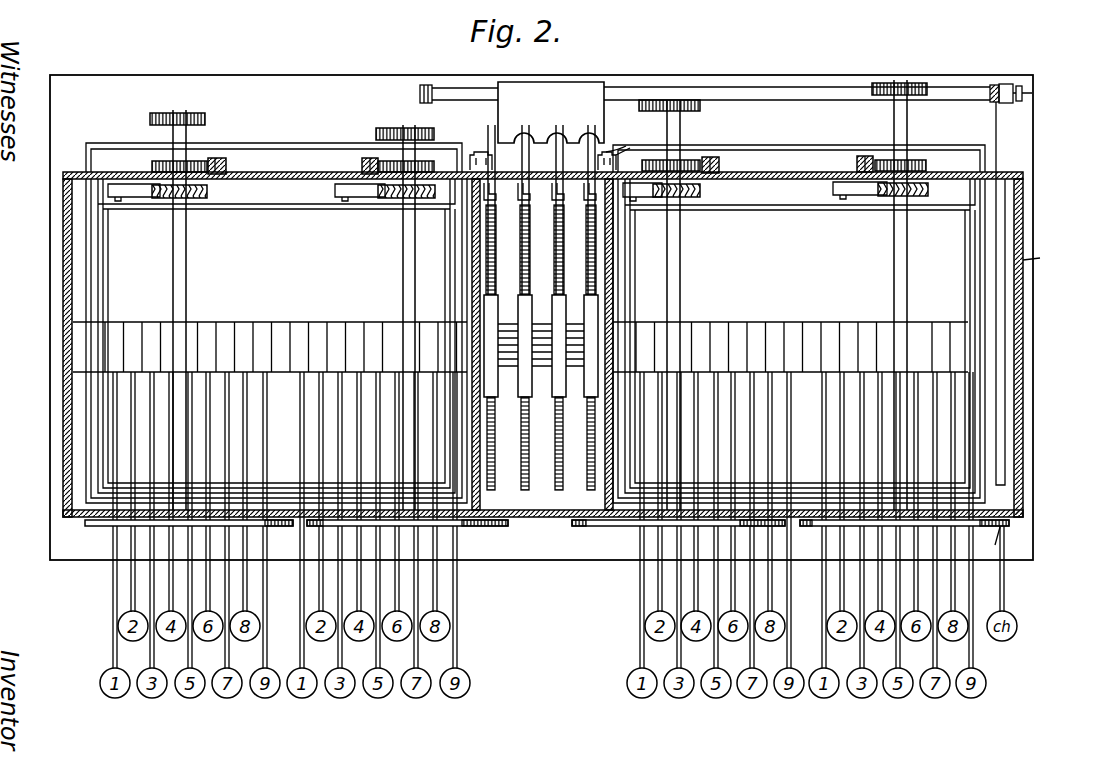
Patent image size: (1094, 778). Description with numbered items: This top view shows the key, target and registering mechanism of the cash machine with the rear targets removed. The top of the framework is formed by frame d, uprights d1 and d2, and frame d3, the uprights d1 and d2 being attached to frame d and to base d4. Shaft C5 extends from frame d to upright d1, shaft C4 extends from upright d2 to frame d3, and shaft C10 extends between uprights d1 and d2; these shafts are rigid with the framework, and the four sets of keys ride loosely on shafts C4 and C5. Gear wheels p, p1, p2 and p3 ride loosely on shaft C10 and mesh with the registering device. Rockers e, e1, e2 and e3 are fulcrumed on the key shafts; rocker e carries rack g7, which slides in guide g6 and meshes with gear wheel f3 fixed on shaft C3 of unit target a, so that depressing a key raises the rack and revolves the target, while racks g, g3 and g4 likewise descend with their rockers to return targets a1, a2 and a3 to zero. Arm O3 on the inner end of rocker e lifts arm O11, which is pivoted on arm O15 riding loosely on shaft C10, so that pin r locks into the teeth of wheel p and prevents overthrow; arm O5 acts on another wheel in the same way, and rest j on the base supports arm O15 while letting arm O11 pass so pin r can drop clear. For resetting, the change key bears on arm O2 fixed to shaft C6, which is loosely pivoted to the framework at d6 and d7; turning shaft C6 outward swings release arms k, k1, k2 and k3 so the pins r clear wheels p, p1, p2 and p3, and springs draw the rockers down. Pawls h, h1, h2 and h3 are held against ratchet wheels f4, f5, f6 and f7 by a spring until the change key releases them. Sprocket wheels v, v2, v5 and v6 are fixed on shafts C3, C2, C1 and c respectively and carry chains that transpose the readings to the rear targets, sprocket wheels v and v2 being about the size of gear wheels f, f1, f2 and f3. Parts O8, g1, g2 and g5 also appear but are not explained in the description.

The frame d is at (63, 288).
The upright d1 is at (472, 268).
The upright d2 is at (613, 265).
The frame d3 is at (1040, 257).
The base d4 is at (986, 539).
The framework pivot d6 is at (1032, 93).
The framework pivot d7 is at (426, 92).
The rest j is at (551, 112).
The shaft C6 is at (795, 92).
The arm O2 is at (996, 86).
The rod O8 is at (995, 104).
The sprocket wheel v is at (912, 83).
The sprocket wheel v2 is at (686, 100).
The sprocket wheel v5 is at (402, 122).
The sprocket wheel v6 is at (176, 107).
The shaft c is at (186, 280).
The shaft C1 is at (403, 283).
The shaft C2 is at (680, 280).
The shaft C3 is at (907, 262).
The shaft C4 is at (790, 330).
The shaft C5 is at (292, 328).
The shaft C10 is at (542, 374).
The gear wheel f is at (152, 165).
The gear wheel f1 is at (428, 162).
The gear wheel f2 is at (690, 160).
The gear wheel f3 is at (918, 160).
The ratchet wheel f4 is at (890, 197).
The ratchet wheel f5 is at (700, 198).
The ratchet wheel f6 is at (398, 199).
The ratchet wheel f7 is at (194, 199).
The rack g is at (217, 158).
The pawl block g1 is at (226, 166).
The pawl block g2 is at (362, 165).
The rack g3 is at (368, 158).
The rack g4 is at (716, 157).
The pawl g5 is at (719, 165).
The guide g6 is at (857, 165).
The rack g7 is at (866, 156).
The pawl h is at (856, 196).
The pawl h1 is at (642, 198).
The pawl h2 is at (360, 198).
The pawl h3 is at (135, 198).
The rocker e is at (790, 150).
The rocker e1 is at (800, 212).
The rocker e2 is at (290, 212).
The rocker e3 is at (284, 150).
The release arm k is at (588, 230).
The release arm k1 is at (556, 230).
The release arm k2 is at (522, 230).
The release arm k3 is at (485, 215).
The gear wheel p is at (586, 270).
The gear wheel p1 is at (554, 272).
The gear wheel p2 is at (520, 272).
The gear wheel p3 is at (486, 240).
The pin r is at (538, 191).
The arm O5 is at (477, 142).
The arm O11 is at (596, 152).
The arm O15 is at (622, 128).
The arm O3 is at (633, 138).
The target a is at (1010, 522).
The target a1 is at (584, 527).
The target a2 is at (476, 527).
The target a3 is at (104, 527).